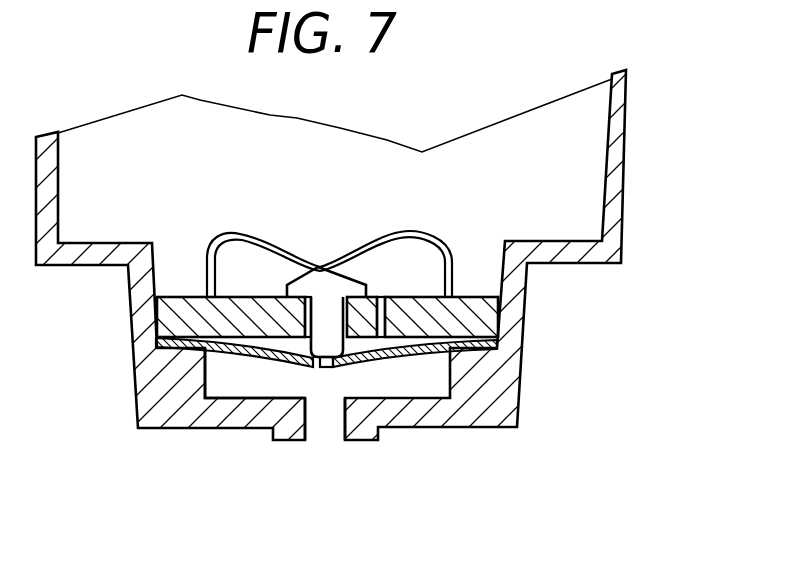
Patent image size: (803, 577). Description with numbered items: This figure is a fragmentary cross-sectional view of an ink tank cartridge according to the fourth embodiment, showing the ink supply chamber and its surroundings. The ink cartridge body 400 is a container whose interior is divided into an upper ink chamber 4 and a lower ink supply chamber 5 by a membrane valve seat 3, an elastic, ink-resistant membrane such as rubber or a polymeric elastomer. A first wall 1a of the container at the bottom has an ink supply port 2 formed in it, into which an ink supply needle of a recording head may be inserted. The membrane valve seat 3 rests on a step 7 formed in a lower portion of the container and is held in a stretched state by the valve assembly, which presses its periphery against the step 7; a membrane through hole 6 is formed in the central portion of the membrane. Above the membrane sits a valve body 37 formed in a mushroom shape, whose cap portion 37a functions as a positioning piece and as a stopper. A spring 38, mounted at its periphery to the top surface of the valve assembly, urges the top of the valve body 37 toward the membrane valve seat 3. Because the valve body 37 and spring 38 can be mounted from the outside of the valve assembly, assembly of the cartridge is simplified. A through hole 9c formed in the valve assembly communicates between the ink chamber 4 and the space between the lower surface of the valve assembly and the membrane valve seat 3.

The ink cartridge body 400 is at (393, 278).
The ink chamber 4 is at (583, 120).
The first wall 1a is at (446, 428).
The ink supply chamber 5 is at (437, 385).
The ink supply port 2 is at (337, 430).
The through hole 9c is at (380, 307).
The membrane valve seat 3 is at (255, 357).
The step 7 is at (487, 350).
The membrane through hole 6 is at (327, 368).
The valve body 37 is at (318, 273).
The cap portion 37a is at (357, 285).
The spring 38 is at (432, 232).